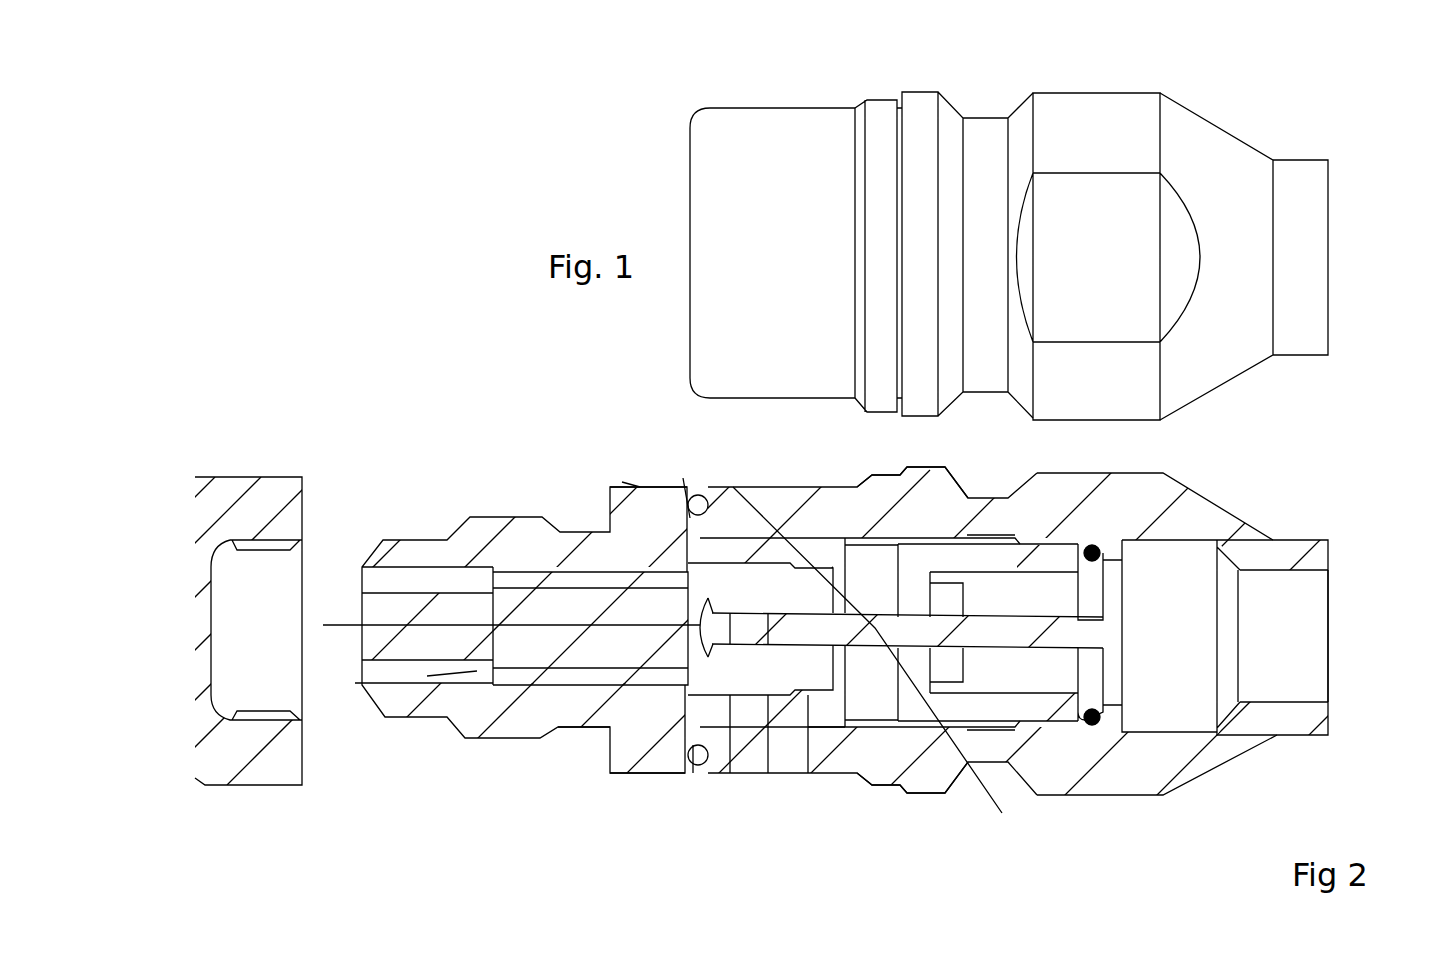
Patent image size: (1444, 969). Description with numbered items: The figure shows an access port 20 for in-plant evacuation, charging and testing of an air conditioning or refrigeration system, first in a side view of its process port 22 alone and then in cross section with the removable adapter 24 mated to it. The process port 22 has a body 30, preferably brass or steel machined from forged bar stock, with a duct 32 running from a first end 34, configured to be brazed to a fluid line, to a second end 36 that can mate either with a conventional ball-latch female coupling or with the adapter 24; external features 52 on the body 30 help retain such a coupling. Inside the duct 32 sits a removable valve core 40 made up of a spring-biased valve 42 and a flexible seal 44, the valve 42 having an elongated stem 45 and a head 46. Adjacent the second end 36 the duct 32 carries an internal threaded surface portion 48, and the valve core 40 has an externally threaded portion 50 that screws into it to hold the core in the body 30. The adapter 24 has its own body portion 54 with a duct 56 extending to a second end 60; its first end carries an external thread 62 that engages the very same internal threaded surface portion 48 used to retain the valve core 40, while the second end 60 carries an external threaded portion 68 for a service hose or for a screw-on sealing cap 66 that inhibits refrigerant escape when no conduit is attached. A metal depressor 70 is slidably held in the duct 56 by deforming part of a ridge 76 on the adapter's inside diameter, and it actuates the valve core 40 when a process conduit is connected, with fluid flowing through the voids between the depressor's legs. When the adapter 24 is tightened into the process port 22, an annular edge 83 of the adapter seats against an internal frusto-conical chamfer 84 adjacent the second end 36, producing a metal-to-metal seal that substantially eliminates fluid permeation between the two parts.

In FIG. 1, the access port 20 is at (1237, 68).
In FIG. 1, the process port 22 is at (1288, 366).
In FIG. 2, the process port 22 is at (1290, 522).
In FIG. 2, the removable adapter 24 is at (524, 748).
In FIG. 1, the body 30 is at (1125, 105).
In FIG. 2, the body 30 is at (1115, 785).
In FIG. 2, the duct 32 is at (828, 740).
In FIG. 2, the first end 34 is at (1335, 712).
In FIG. 2, the second end 36 is at (688, 780).
In FIG. 2, the valve core 40 is at (889, 580).
In FIG. 2, the valve 42 is at (1044, 632).
In FIG. 2, the flexible seal 44 is at (1093, 545).
In FIG. 2, the elongated stem 45 is at (1000, 600).
In FIG. 2, the head 46 is at (1112, 597).
In FIG. 2, the internal threaded surface portion 48 is at (856, 783).
In FIG. 2, the externally threaded portion 50 is at (773, 507).
In FIG. 1, the external features 52 is at (952, 75).
In FIG. 2, the external features 52 is at (947, 447).
In FIG. 2, the body portion 54 is at (470, 710).
In FIG. 2, the duct 56 is at (605, 742).
In FIG. 2, the second end 60 is at (355, 683).
In FIG. 2, the external thread 62 is at (703, 522).
In FIG. 2, the sealing cap 66 is at (270, 468).
In FIG. 2, the external threaded portion 68 is at (417, 540).
In FIG. 2, the depressor 70 is at (508, 607).
In FIG. 2, the ridge 76 is at (1002, 813).
In FIG. 2, the annular edge 83 is at (622, 482).
In FIG. 2, the internal frusto-conical chamfer 84 is at (683, 478).